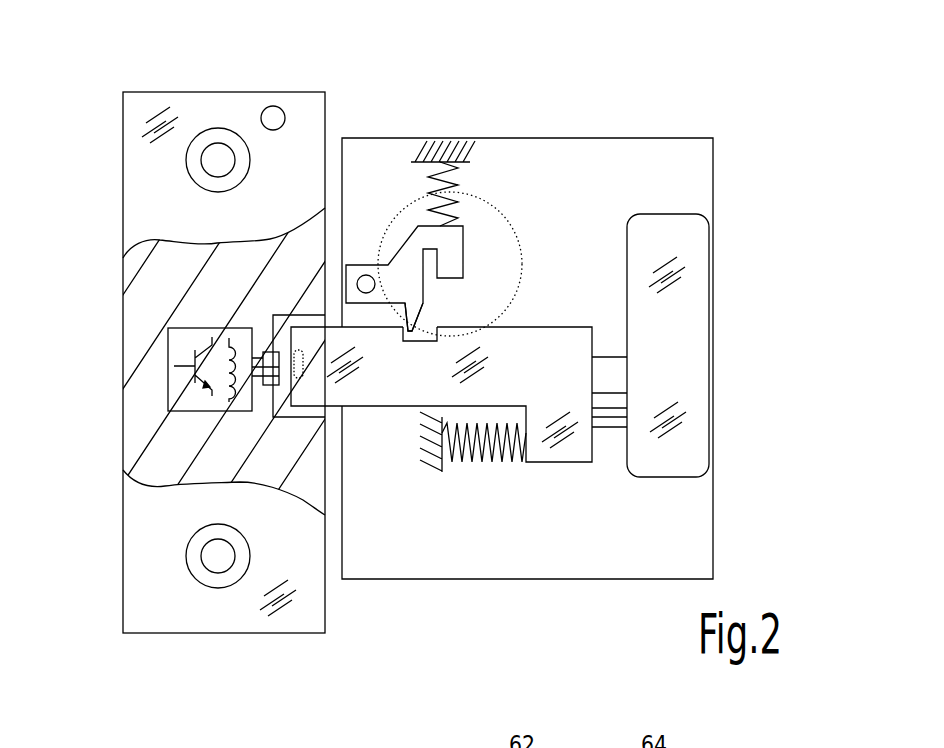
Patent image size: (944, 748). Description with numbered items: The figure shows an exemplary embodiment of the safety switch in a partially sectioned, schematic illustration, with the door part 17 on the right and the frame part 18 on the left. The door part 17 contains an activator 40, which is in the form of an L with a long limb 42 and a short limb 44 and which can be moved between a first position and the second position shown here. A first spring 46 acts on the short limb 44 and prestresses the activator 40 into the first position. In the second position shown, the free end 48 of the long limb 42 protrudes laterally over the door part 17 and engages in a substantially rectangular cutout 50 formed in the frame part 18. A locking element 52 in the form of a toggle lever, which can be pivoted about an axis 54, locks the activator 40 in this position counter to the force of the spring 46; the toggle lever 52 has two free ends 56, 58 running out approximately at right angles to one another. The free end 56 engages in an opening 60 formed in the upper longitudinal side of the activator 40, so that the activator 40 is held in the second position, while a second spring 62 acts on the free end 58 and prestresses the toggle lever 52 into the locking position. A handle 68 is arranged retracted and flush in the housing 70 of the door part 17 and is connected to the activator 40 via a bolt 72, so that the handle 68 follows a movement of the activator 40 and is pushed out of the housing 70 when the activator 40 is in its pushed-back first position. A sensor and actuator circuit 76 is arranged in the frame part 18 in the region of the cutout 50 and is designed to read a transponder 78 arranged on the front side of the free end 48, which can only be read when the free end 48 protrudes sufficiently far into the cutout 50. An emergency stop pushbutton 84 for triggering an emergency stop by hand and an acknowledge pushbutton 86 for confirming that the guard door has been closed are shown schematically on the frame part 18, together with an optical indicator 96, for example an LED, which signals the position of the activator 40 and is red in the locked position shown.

The door part 17 is at (658, 136).
The frame part 18 is at (122, 204).
The activator 40 is at (552, 327).
The long limb 42 is at (398, 405).
The short limb 44 is at (583, 453).
The spring 46 is at (502, 460).
The free end 48 is at (275, 414).
The cutout 50 is at (272, 318).
The locking element 52 is at (410, 250).
The axis 54 is at (366, 275).
The free end 56 is at (413, 310).
The free end 58 is at (460, 236).
The opening 60 is at (415, 342).
The second spring 62 is at (457, 182).
The handle 68 is at (695, 253).
The housing 70 is at (713, 502).
The bolt 72 is at (612, 373).
The sensor and actuator circuit 76 is at (165, 397).
The transponder 78 is at (305, 350).
The emergency stop pushbutton 84 is at (218, 145).
The acknowledge pushbutton 86 is at (205, 575).
The optical indicator 96 is at (273, 106).